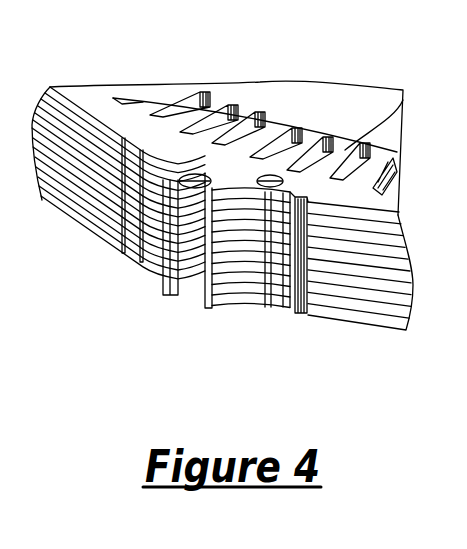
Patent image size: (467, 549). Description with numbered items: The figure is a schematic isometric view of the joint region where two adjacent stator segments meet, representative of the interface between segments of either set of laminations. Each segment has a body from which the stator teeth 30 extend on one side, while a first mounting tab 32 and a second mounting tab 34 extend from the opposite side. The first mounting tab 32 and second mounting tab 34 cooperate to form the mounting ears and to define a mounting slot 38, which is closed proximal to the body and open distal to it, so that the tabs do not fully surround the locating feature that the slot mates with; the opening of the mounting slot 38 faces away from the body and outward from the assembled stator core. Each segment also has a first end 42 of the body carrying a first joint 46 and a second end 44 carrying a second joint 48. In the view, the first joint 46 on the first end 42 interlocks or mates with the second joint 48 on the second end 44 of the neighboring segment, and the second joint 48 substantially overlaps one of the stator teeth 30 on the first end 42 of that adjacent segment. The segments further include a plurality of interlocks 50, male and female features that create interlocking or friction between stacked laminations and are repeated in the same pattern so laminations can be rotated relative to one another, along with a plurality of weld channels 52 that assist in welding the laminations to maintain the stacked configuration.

The stator teeth 30 is at (385, 135).
The first mounting tab 32 is at (213, 303).
The second mounting tab 34 is at (163, 280).
The mounting slot 38 is at (192, 278).
The first end 42 is at (240, 165).
The second end 44 is at (165, 135).
The first joint 46 is at (247, 172).
The second joint 48 is at (210, 160).
The interlocks 50 is at (275, 176).
The weld channels 52 is at (298, 313).